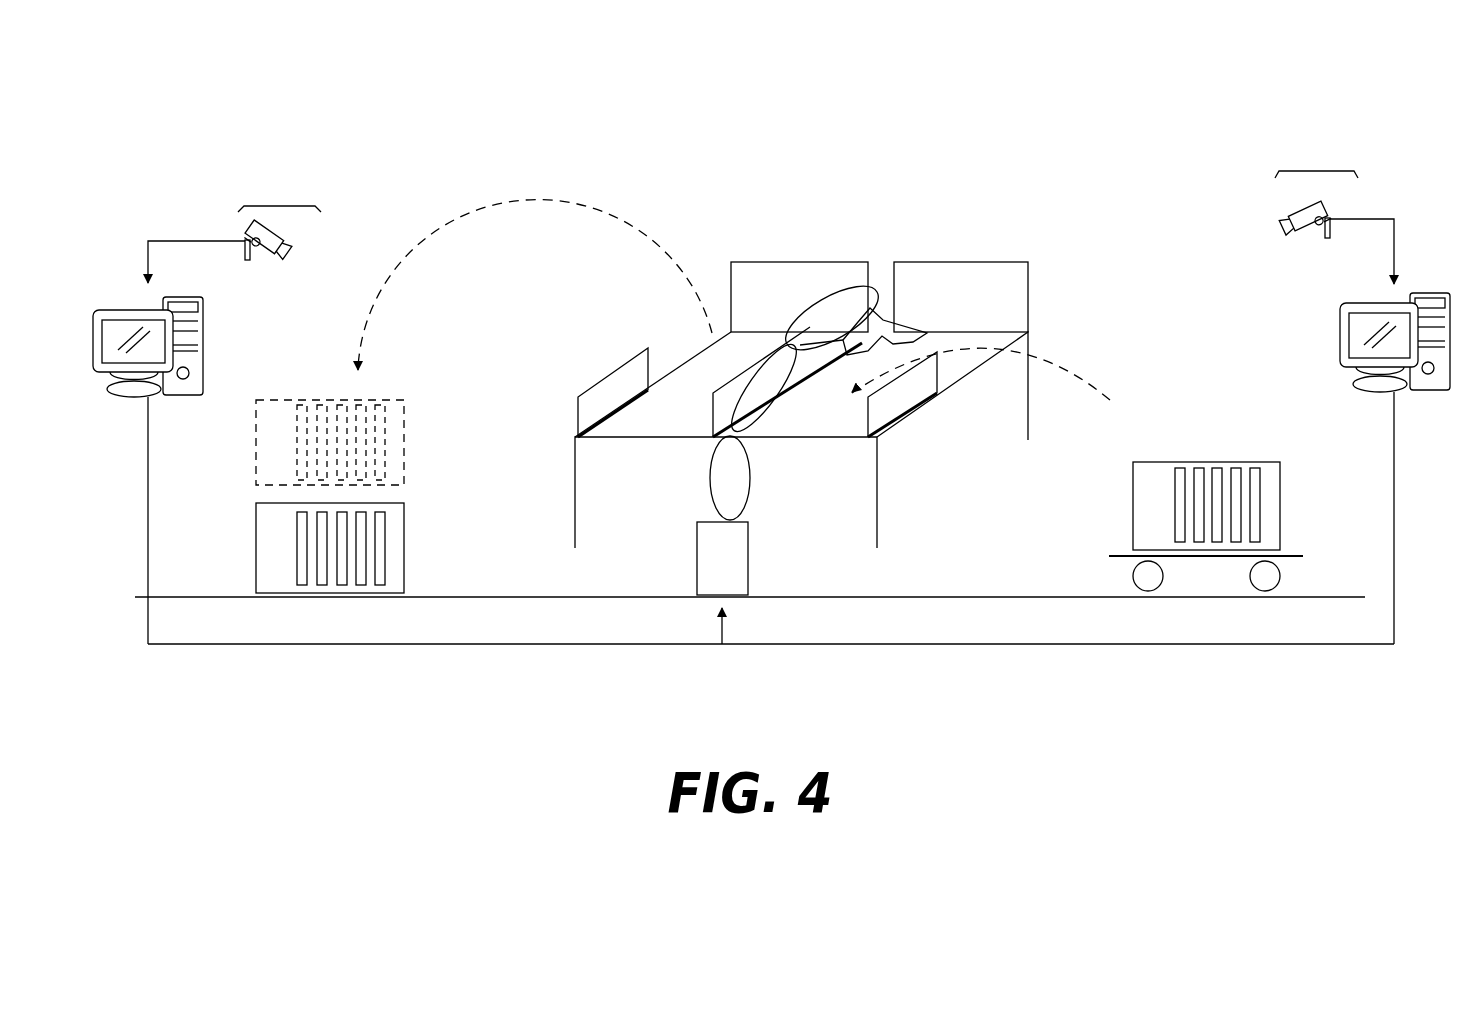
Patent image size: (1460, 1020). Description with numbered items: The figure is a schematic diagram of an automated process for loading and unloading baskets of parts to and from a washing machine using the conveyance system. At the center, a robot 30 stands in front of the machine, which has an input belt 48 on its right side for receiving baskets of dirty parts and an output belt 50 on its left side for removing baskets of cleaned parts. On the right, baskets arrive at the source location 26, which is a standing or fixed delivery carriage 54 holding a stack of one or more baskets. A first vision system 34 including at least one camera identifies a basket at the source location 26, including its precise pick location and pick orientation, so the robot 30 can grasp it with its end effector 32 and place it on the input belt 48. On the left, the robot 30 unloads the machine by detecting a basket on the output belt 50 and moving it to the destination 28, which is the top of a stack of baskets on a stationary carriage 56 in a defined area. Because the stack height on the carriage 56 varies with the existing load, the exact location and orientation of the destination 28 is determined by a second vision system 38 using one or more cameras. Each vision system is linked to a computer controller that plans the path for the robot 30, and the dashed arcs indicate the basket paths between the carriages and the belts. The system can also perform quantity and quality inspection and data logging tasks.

The source location 26 is at (1206, 498).
The destination 28 is at (354, 468).
The robot 30 is at (776, 405).
The end effector 32 is at (890, 303).
The first vision system 34 is at (1313, 171).
The second vision system 38 is at (278, 206).
The input belt 48 is at (816, 422).
The output belt 50 is at (656, 422).
The delivery carriage 54 is at (1189, 468).
The carriage 56 is at (375, 402).